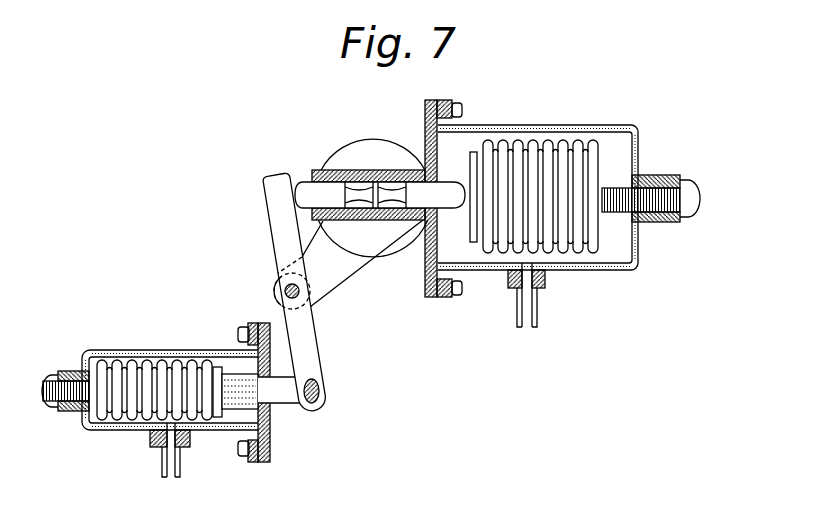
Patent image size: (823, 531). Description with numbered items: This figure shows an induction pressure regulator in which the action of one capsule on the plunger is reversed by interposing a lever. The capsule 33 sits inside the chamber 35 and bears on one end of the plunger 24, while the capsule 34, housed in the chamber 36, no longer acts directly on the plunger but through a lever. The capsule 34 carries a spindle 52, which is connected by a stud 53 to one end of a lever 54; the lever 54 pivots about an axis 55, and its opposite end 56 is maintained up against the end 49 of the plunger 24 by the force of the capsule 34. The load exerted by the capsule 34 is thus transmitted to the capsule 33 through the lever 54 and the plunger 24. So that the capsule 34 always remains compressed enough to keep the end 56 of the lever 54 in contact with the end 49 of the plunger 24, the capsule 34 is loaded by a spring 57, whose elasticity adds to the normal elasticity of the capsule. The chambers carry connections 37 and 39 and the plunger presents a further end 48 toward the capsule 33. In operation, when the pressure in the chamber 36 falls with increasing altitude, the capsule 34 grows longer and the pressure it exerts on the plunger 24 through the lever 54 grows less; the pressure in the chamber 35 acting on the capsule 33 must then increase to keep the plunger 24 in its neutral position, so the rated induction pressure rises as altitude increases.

The plunger 24 is at (423, 199).
The capsule 33 is at (528, 177).
The capsule 34 is at (145, 387).
The chamber 35 is at (494, 262).
The chamber 36 is at (122, 423).
The pipe connection 37 is at (528, 316).
The pipe connection 39 is at (178, 473).
The rod end 48 is at (462, 203).
The end of the plunger 49 is at (300, 184).
The spindle 52 is at (270, 398).
The stud 53 is at (320, 393).
The lever 54 is at (310, 347).
The axis 55 is at (287, 285).
The end of the lever 56 is at (273, 191).
The spring 57 is at (233, 374).